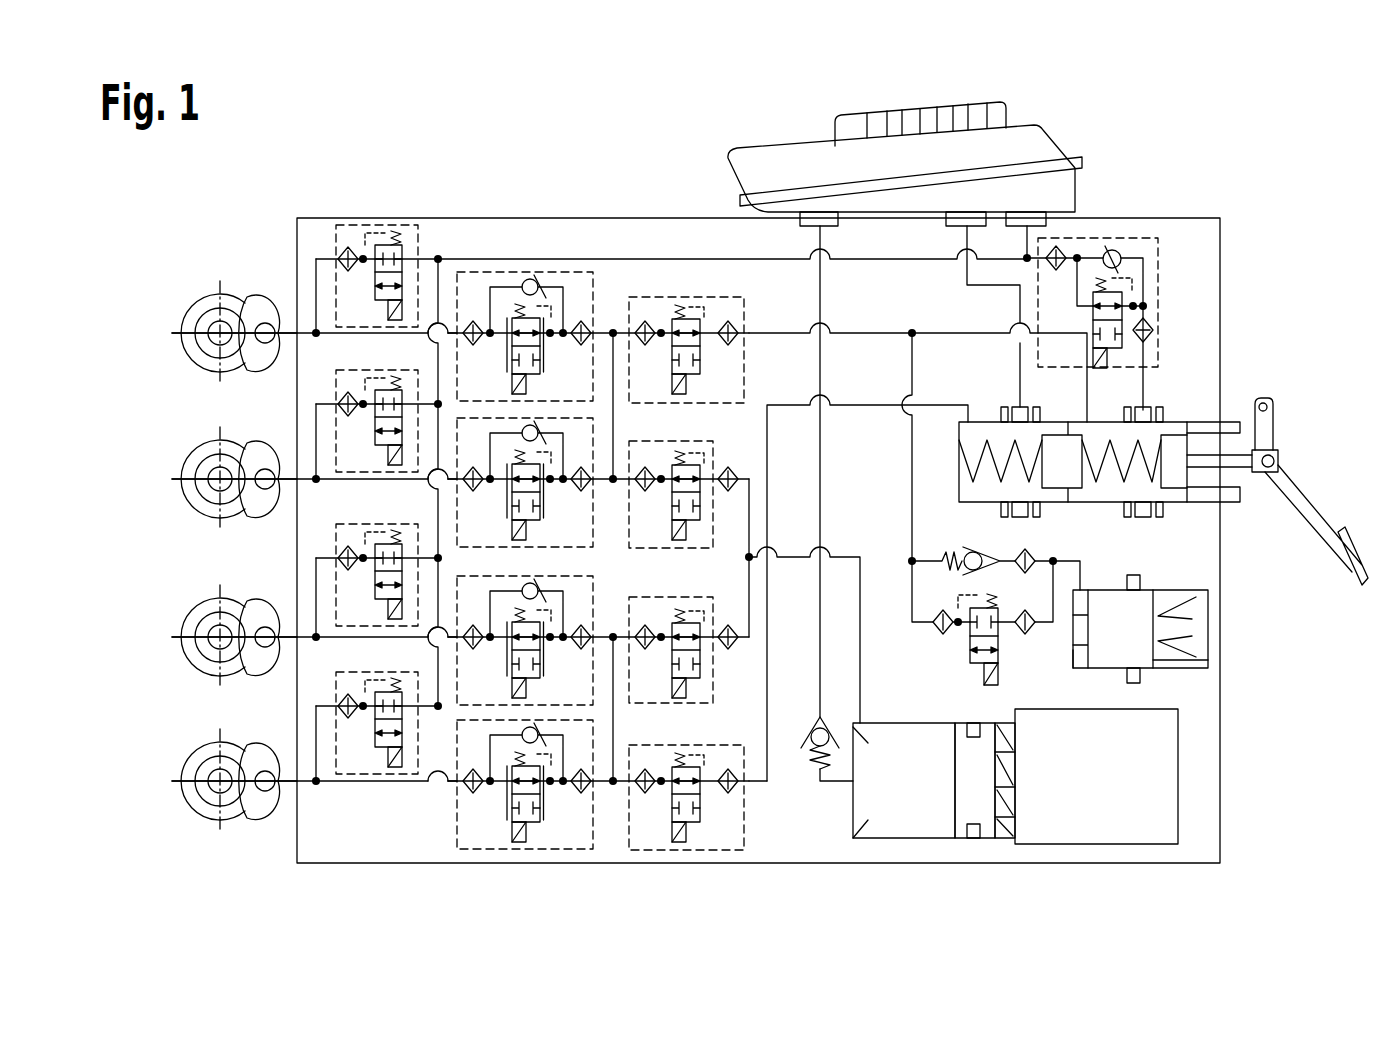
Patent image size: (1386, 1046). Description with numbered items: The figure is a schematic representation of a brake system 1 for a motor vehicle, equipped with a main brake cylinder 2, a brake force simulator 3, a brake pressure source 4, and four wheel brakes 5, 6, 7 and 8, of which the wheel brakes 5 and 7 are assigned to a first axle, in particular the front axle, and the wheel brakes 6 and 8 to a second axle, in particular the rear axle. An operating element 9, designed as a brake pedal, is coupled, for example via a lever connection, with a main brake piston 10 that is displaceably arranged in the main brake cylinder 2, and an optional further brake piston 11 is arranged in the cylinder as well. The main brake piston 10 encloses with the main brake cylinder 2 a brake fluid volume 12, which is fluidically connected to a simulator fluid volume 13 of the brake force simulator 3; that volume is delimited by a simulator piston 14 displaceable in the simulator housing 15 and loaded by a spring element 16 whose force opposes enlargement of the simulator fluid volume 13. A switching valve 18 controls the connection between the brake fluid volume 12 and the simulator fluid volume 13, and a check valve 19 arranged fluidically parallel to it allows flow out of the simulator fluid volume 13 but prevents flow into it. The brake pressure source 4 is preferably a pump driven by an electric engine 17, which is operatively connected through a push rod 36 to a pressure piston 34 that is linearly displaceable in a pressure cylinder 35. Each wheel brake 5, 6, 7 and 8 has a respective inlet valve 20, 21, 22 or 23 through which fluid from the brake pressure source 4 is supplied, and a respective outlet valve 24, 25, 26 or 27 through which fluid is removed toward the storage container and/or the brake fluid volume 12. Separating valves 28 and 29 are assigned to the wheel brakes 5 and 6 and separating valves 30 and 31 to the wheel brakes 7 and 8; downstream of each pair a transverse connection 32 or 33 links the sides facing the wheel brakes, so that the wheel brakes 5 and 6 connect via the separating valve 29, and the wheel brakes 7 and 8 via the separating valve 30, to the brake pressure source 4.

The brake system 1 is at (1182, 160).
The main brake cylinder 2 is at (1133, 388).
The brake force simulator 3 is at (1192, 660).
The brake pressure source 4 is at (996, 816).
The wheel brake 5 is at (192, 349).
The wheel brake 6 is at (192, 495).
The wheel brake 7 is at (192, 652).
The wheel brake 8 is at (192, 797).
The operating element 9 is at (1292, 487).
The main brake piston 10 is at (1182, 432).
The further brake piston 11 is at (1050, 420).
The brake fluid volume 12 is at (1100, 425).
The simulator fluid volume 13 is at (1083, 660).
The simulator piston 14 is at (1135, 655).
The simulator cylinder 15 is at (1178, 672).
The spring element 16 is at (1190, 610).
The electric engine 17 is at (1107, 812).
The switching valve 18 is at (962, 646).
The check valve 19 is at (968, 552).
The inlet valve 20 is at (505, 298).
The inlet valve 21 is at (561, 511).
The inlet valve 22 is at (558, 672).
The inlet valve 23 is at (505, 815).
The outlet valve 24 is at (333, 252).
The outlet valve 25 is at (328, 388).
The outlet valve 26 is at (328, 542).
The outlet valve 27 is at (356, 745).
The separating valve 28 is at (738, 360).
The separating valve 29 is at (722, 454).
The separating valve 30 is at (714, 676).
The separating valve 31 is at (707, 814).
The transverse connection 32 is at (616, 388).
The transverse connection 33 is at (615, 692).
The pressure piston 34 is at (987, 812).
The pressure cylinder 35 is at (870, 840).
The push rod 36 is at (1012, 800).